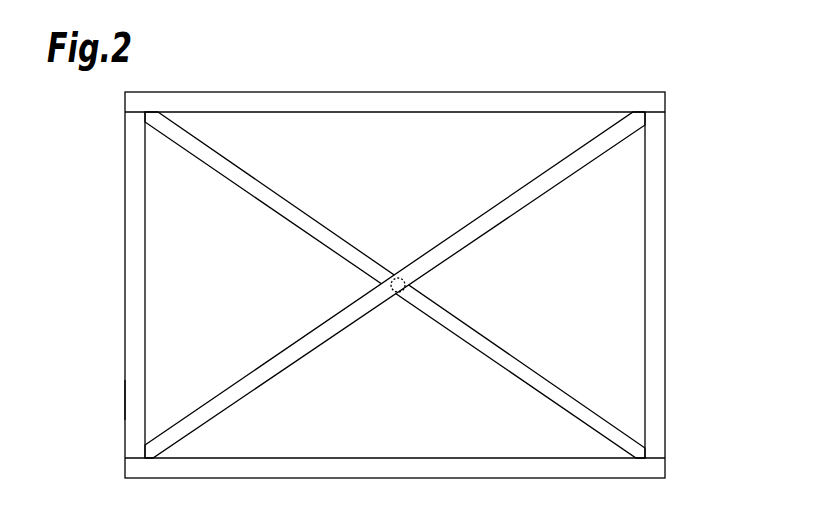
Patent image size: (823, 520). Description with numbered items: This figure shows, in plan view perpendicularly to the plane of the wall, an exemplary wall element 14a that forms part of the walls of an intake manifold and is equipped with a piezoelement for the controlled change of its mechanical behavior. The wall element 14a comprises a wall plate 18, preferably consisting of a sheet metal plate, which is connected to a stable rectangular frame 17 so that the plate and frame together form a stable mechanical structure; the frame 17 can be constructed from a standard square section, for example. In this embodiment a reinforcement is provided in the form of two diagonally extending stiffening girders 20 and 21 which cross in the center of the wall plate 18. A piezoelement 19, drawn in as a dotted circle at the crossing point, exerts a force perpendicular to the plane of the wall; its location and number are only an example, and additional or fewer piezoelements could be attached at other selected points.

The wall element 14a is at (106, 392).
The frame 17 is at (655, 292).
The wall plate 18 is at (397, 409).
The piezoelement 19 is at (400, 278).
The stiffening girder 20 is at (240, 182).
The stiffening girder 21 is at (258, 372).